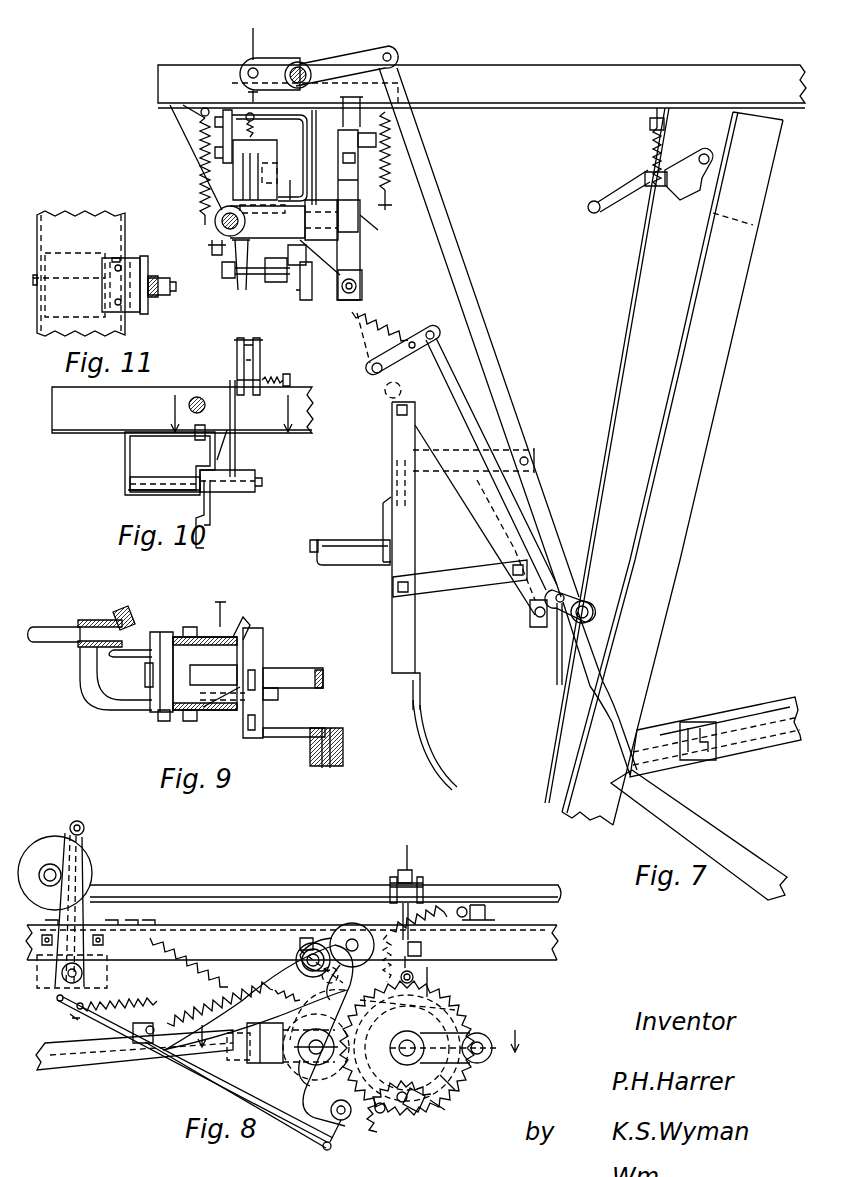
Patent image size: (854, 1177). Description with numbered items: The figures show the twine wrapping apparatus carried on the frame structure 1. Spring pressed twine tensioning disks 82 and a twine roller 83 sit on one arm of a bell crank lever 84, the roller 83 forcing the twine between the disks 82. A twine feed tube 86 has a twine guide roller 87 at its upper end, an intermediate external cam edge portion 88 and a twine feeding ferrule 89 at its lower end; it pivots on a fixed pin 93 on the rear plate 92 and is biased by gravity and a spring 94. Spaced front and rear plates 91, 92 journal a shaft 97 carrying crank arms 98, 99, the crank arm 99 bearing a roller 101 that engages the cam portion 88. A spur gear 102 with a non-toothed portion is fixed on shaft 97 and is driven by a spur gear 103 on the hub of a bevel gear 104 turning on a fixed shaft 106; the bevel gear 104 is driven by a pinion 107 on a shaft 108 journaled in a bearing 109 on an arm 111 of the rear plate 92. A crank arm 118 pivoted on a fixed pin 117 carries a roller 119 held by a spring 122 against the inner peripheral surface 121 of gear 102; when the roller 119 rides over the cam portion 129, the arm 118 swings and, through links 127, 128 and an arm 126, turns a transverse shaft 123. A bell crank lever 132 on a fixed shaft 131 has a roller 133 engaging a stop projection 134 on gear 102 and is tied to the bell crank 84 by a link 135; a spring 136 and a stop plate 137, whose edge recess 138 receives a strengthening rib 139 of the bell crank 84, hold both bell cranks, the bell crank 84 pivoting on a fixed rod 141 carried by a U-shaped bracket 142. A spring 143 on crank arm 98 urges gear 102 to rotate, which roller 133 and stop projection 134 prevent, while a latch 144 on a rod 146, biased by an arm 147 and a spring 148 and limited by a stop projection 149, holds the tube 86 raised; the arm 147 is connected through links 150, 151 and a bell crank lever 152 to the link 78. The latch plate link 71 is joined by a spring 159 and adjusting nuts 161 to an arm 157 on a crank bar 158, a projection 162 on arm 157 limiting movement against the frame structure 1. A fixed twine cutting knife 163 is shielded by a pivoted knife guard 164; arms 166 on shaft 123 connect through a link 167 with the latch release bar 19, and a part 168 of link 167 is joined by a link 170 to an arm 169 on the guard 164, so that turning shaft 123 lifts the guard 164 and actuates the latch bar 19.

In FIG. 7, the frame structure 1 is at (484, 72).
In FIG. 11, the frame structure 1 is at (90, 220).
In FIG. 10, the frame structure 1 is at (92, 428).
In FIG. 8, the frame structure 1 is at (516, 958).
In FIG. 7, the latch release bar 19 is at (761, 730).
In FIG. 7, the latch plate link 71 is at (632, 316).
In FIG. 7, the link 78 is at (557, 662).
In FIG. 10, the twine tensioning disks 82 is at (253, 370).
In FIG. 8, the twine tensioning disks 82 is at (88, 861).
In FIG. 8, the twine roller 83 is at (74, 824).
In FIG. 11, the bell crank lever 84 is at (152, 300).
In FIG. 10, the bell crank lever 84 is at (236, 470).
In FIG. 8, the bell crank lever 84 is at (106, 945).
In FIG. 7, the twine feed tube 86 is at (362, 260).
In FIG. 8, the twine feed tube 86 is at (66, 1060).
In FIG. 7, the twine guide roller 87 is at (352, 104).
In FIG. 8, the twine guide roller 87 is at (356, 922).
In FIG. 8, the cam edge portion 88 is at (176, 1066).
In FIG. 7, the twine feeding ferrule 89 is at (363, 290).
In FIG. 7, the front plate 91 is at (232, 286).
In FIG. 9, the front plate 91 is at (208, 635).
In FIG. 7, the rear plate 92 is at (308, 186).
In FIG. 9, the rear plate 92 is at (226, 716).
In FIG. 8, the rear plate 92 is at (330, 1108).
In FIG. 7, the fixed pin 93 is at (384, 168).
In FIG. 8, the fixed pin 93 is at (312, 942).
In FIG. 7, the spring 94 is at (389, 176).
In FIG. 8, the spring 94 is at (231, 1004).
In FIG. 7, the shaft 97 is at (372, 214).
In FIG. 9, the shaft 97 is at (266, 650).
In FIG. 8, the shaft 97 is at (407, 1040).
In FIG. 7, the crank arm 98 is at (210, 252).
In FIG. 9, the crank arm 98 is at (240, 618).
In FIG. 8, the crank arm 98 is at (407, 1048).
In FIG. 7, the crank arm 99 is at (320, 200).
In FIG. 9, the crank arm 99 is at (292, 738).
In FIG. 8, the crank arm 99 is at (442, 1040).
In FIG. 7, the roller 101 is at (366, 240).
In FIG. 9, the roller 101 is at (348, 746).
In FIG. 8, the roller 101 is at (482, 1038).
In FIG. 7, the spur gear 102 is at (272, 150).
In FIG. 9, the spur gear 102 is at (312, 688).
In FIG. 8, the spur gear 102 is at (460, 1010).
In FIG. 9, the spur gear 103 is at (145, 673).
In FIG. 8, the spur gear 103 is at (320, 1066).
In FIG. 7, the bevel gear 104 is at (240, 262).
In FIG. 9, the bevel gear 104 is at (140, 650).
In FIG. 8, the bevel gear 104 is at (311, 1087).
In FIG. 9, the fixed shaft 106 is at (166, 630).
In FIG. 9, the pinion 107 is at (121, 612).
In FIG. 8, the pinion 107 is at (262, 1066).
In FIG. 7, the shaft 108 is at (214, 229).
In FIG. 9, the shaft 108 is at (42, 627).
In FIG. 8, the shaft 108 is at (62, 1014).
In FIG. 9, the bearing 109 is at (88, 620).
In FIG. 7, the arm 111 is at (292, 205).
In FIG. 9, the arm 111 is at (88, 686).
In FIG. 8, the arm 111 is at (286, 1086).
In FIG. 8, the fixed pin 117 is at (312, 1010).
In FIG. 7, the crank arm 118 is at (250, 158).
In FIG. 8, the crank arm 118 is at (346, 1024).
In FIG. 7, the roller 119 is at (276, 182).
In FIG. 8, the roller 119 is at (372, 1025).
In FIG. 9, the inner peripheral surface 121 is at (302, 670).
In FIG. 7, the spring 122 is at (255, 130).
In FIG. 8, the spring 122 is at (426, 955).
In FIG. 7, the transverse shaft 123 is at (305, 64).
In FIG. 10, the transverse shaft 123 is at (197, 397).
In FIG. 7, the arm 126 is at (282, 62).
In FIG. 8, the arm 126 is at (392, 884).
In FIG. 7, the link 127 is at (250, 54).
In FIG. 8, the link 127 is at (410, 863).
In FIG. 8, the link 128 is at (426, 978).
In FIG. 8, the cam portion 129 is at (447, 1077).
In FIG. 7, the fixed shaft 131 is at (250, 290).
In FIG. 9, the fixed shaft 131 is at (168, 722).
In FIG. 8, the fixed shaft 131 is at (345, 1121).
In FIG. 7, the bell crank lever 132 is at (278, 286).
In FIG. 9, the bell crank lever 132 is at (205, 712).
In FIG. 8, the bell crank lever 132 is at (326, 1149).
In FIG. 7, the roller 133 is at (302, 266).
In FIG. 8, the roller 133 is at (412, 1114).
In FIG. 7, the stop projection 134 is at (294, 256).
In FIG. 9, the stop projection 134 is at (276, 698).
In FIG. 8, the stop projection 134 is at (408, 1090).
In FIG. 7, the link 135 is at (310, 302).
In FIG. 8, the link 135 is at (220, 1087).
In FIG. 10, the spring 136 is at (205, 540).
In FIG. 8, the spring 136 is at (140, 1000).
In FIG. 11, the stop plate 137 is at (102, 267).
In FIG. 10, the stop plate 137 is at (186, 437).
In FIG. 8, the stop plate 137 is at (160, 962).
In FIG. 11, the edge recess 138 is at (136, 265).
In FIG. 11, the strengthening rib 139 is at (142, 314).
In FIG. 10, the strengthening rib 139 is at (236, 453).
In FIG. 8, the strengthening rib 139 is at (68, 884).
In FIG. 11, the fixed rod 141 is at (70, 290).
In FIG. 10, the fixed rod 141 is at (167, 483).
In FIG. 10, the U-shaped bracket 142 is at (160, 497).
In FIG. 7, the spring 143 is at (204, 165).
In FIG. 7, the latch 144 is at (360, 316).
In FIG. 7, the rod 146 is at (372, 371).
In FIG. 7, the arm 147 is at (435, 336).
In FIG. 7, the spring 148 is at (404, 334).
In FIG. 7, the stop projection 149 is at (385, 392).
In FIG. 7, the link 150 is at (448, 392).
In FIG. 7, the link 151 is at (529, 603).
In FIG. 7, the bell crank lever 152 is at (596, 612).
In FIG. 7, the arm 157 is at (698, 150).
In FIG. 7, the crank bar 158 is at (592, 201).
In FIG. 7, the spring 159 is at (654, 153).
In FIG. 7, the spring position adjusting nuts 161 is at (656, 124).
In FIG. 7, the projection 162 is at (687, 184).
In FIG. 7, the twine cutting knife 163 is at (346, 545).
In FIG. 7, the knife guard 164 is at (318, 545).
In FIG. 7, the arms 166 is at (372, 48).
In FIG. 7, the link 167 is at (442, 204).
In FIG. 7, the part 168 is at (494, 450).
In FIG. 7, the arm 169 is at (384, 505).
In FIG. 7, the link 170 is at (396, 470).